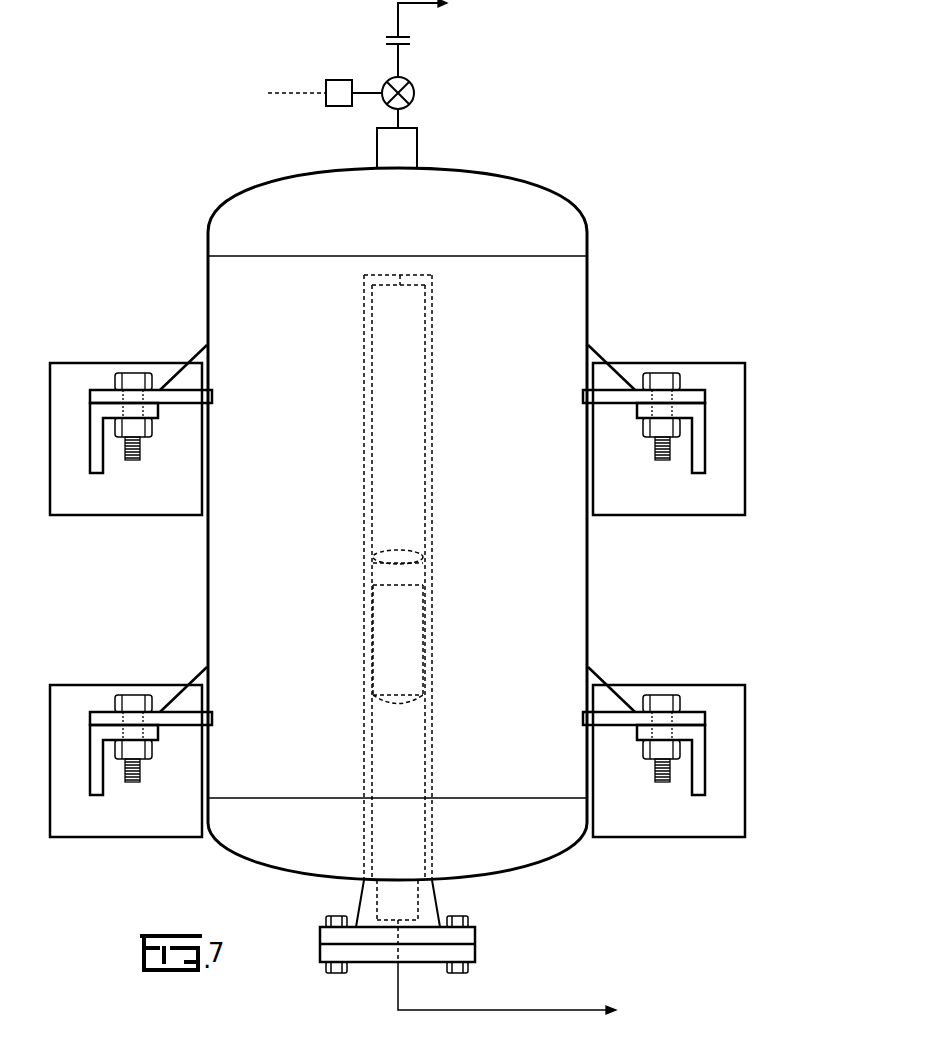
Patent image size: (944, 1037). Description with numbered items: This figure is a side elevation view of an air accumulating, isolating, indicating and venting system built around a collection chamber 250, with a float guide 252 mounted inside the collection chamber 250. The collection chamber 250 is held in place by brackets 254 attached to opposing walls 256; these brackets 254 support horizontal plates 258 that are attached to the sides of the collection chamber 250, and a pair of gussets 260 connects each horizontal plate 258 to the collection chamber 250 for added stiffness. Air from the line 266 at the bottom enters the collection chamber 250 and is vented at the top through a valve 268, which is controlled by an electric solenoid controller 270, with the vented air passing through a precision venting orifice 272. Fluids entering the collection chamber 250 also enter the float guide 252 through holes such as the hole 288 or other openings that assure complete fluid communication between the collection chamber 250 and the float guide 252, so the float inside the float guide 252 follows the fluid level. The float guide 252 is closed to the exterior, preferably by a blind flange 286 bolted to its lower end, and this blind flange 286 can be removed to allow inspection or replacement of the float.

The collection chamber 250 is at (258, 540).
The float guide 252 is at (441, 913).
The bracket 254 is at (90, 445).
The opposing wall 256 is at (126, 607).
The horizontal plate 258 is at (105, 390).
The gusset 260 is at (174, 383).
The line 266 is at (516, 1010).
The valve 268 is at (412, 85).
The electric solenoid controller 270 is at (328, 80).
The precision venting orifice 272 is at (406, 37).
The blind flange 286 is at (400, 287).
The hole 288 is at (433, 776).